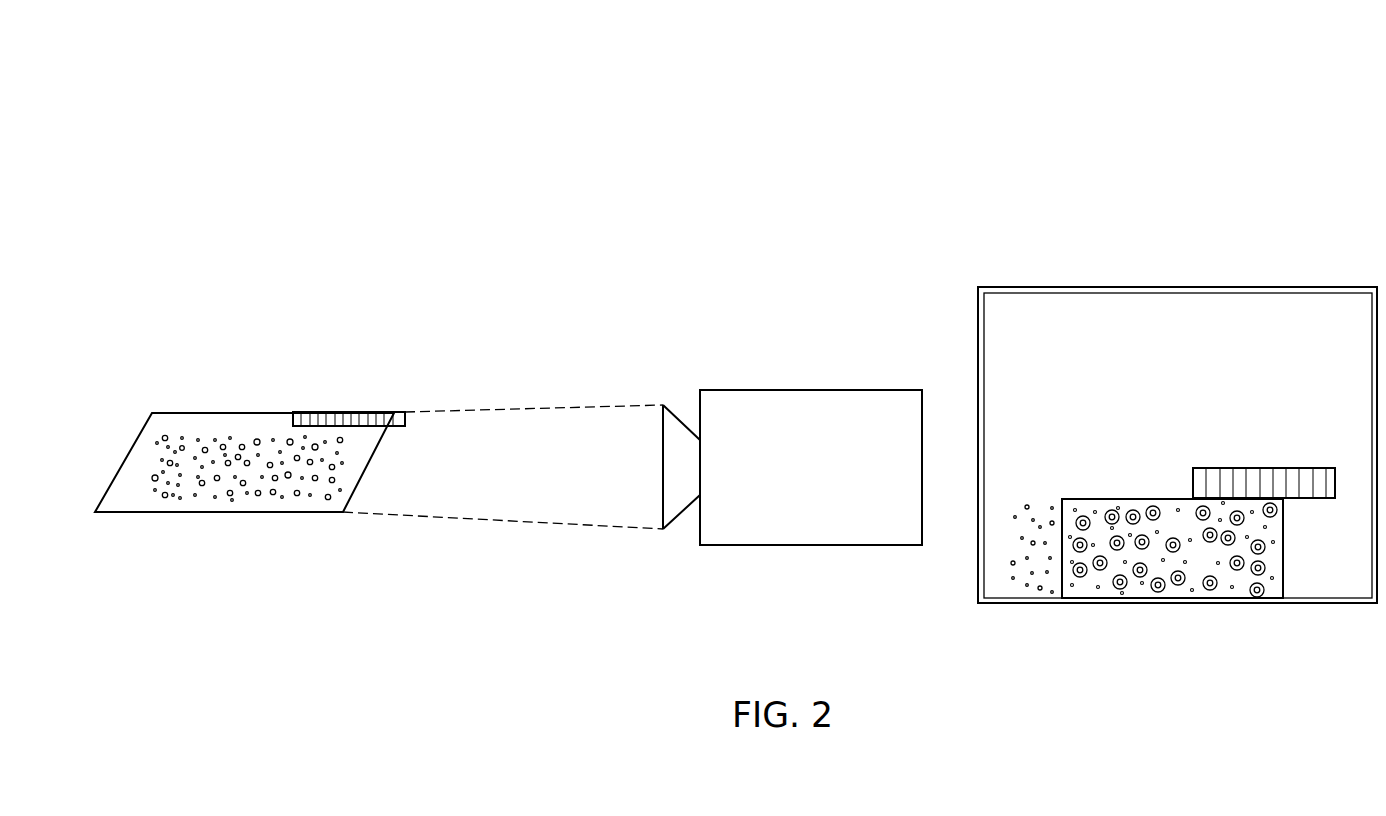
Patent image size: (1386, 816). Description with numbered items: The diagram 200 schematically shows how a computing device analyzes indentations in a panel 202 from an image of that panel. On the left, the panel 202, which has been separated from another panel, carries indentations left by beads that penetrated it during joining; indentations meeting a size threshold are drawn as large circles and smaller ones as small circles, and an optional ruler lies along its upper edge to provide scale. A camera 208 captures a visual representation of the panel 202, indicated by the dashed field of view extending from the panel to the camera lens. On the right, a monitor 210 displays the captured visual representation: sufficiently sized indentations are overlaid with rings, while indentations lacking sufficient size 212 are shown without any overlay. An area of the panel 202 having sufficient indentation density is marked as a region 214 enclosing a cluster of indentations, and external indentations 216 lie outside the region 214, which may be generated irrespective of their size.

The diagram 200 is at (1100, 170).
The panel 202 is at (186, 425).
The camera 208 is at (807, 390).
The monitor 210 is at (1180, 287).
The indentations lacking sufficient size 212 is at (1098, 589).
The region 214 is at (1283, 545).
The external indentations 216 is at (1028, 588).